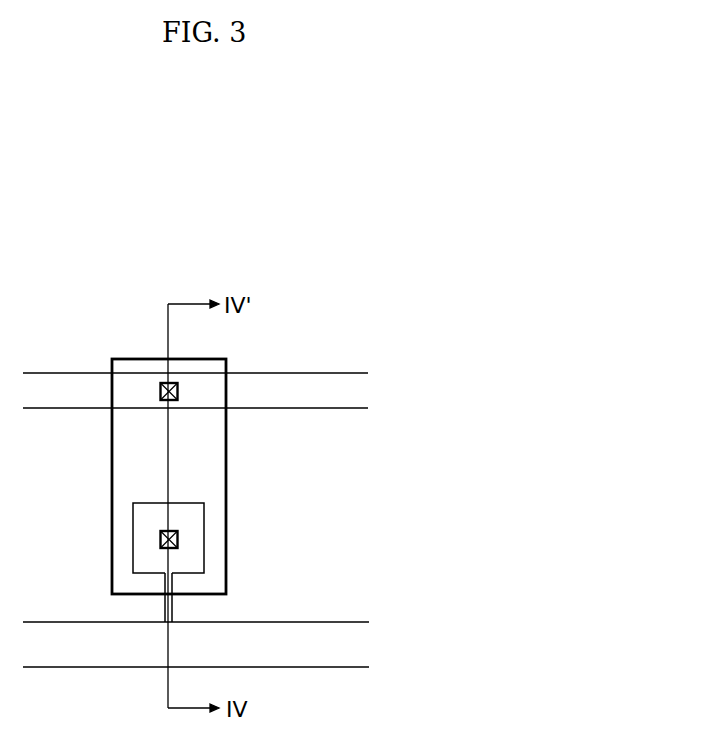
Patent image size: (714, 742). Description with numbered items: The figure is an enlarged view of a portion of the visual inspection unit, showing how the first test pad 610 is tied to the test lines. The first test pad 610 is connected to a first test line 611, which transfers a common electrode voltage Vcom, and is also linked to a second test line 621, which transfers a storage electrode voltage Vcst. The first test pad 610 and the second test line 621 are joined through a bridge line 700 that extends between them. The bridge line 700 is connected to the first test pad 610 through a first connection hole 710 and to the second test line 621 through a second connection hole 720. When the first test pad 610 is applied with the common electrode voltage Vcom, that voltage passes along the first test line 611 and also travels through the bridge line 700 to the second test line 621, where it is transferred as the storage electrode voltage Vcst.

The first test pad 610 is at (204, 550).
The first test line 611 is at (347, 622).
The second test line 621 is at (342, 373).
The bridge line 700 is at (226, 472).
The first connection hole 710 is at (160, 540).
The second connection hole 720 is at (160, 392).